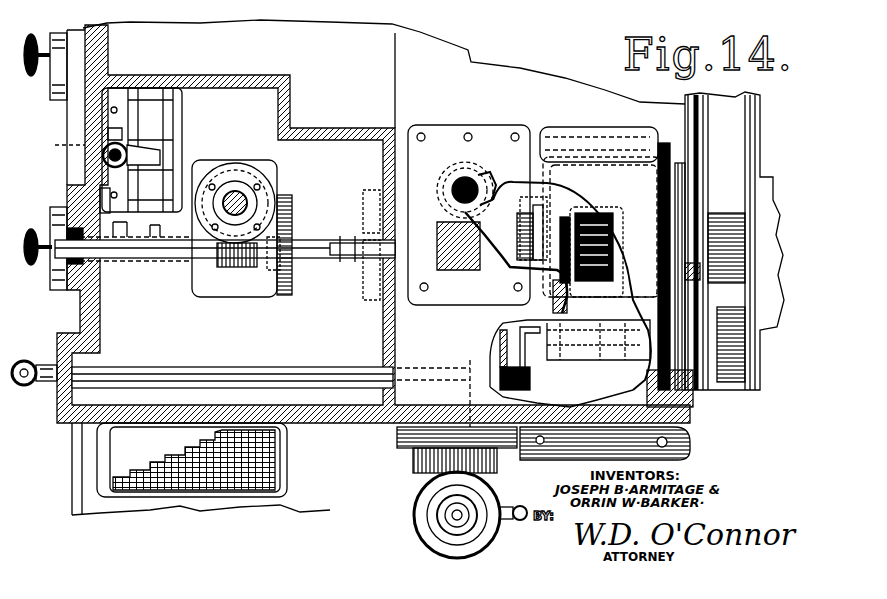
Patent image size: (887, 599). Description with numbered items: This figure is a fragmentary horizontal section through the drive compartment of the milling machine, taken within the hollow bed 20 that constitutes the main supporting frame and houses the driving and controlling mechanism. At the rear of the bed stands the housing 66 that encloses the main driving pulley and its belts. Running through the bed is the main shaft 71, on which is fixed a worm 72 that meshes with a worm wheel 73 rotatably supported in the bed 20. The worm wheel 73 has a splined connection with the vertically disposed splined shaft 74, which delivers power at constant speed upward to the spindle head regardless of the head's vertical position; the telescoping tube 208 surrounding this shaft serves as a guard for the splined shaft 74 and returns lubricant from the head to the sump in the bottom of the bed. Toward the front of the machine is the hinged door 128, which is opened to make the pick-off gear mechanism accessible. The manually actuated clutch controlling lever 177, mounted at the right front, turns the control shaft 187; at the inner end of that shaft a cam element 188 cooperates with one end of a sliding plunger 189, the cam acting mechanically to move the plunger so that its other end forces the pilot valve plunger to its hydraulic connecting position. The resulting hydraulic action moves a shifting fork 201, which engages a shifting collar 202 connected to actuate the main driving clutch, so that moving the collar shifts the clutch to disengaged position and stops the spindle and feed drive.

The hollow bed 20 is at (373, 50).
The housing 66 is at (740, 138).
The main shaft 71 is at (347, 238).
The worm 72 is at (450, 283).
The worm wheel 73 is at (480, 166).
The splined shaft 74 is at (453, 180).
The hinged door 128 is at (45, 200).
The clutch controlling lever 177 is at (35, 355).
The control shaft 187 is at (177, 368).
The cam element 188 is at (530, 373).
The sliding plunger 189 is at (537, 357).
The shifting fork 201 is at (600, 258).
The shifting collar 202 is at (590, 220).
The telescoping tube 208 is at (462, 177).